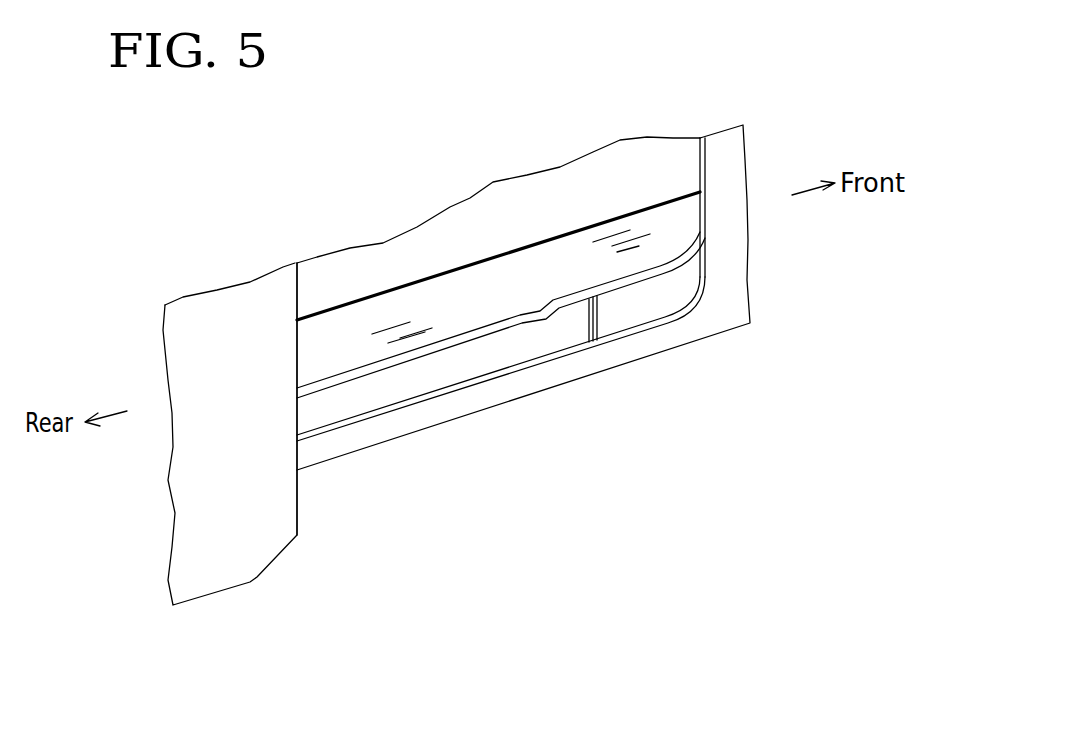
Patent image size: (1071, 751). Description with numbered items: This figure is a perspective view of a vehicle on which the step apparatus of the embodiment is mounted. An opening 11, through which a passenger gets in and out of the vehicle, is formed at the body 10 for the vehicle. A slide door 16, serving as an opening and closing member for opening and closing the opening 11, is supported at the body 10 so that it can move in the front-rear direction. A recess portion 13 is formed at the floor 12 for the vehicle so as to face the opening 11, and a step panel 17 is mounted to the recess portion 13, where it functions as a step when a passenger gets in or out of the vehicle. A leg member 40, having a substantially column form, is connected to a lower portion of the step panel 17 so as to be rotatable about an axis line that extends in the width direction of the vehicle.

The body 10 is at (724, 355).
The opening 11 is at (706, 157).
The floor 12 is at (305, 298).
The recess portion 13 is at (500, 257).
The slide door 16 is at (215, 577).
The step panel 17 is at (420, 303).
The leg member 40 is at (598, 320).